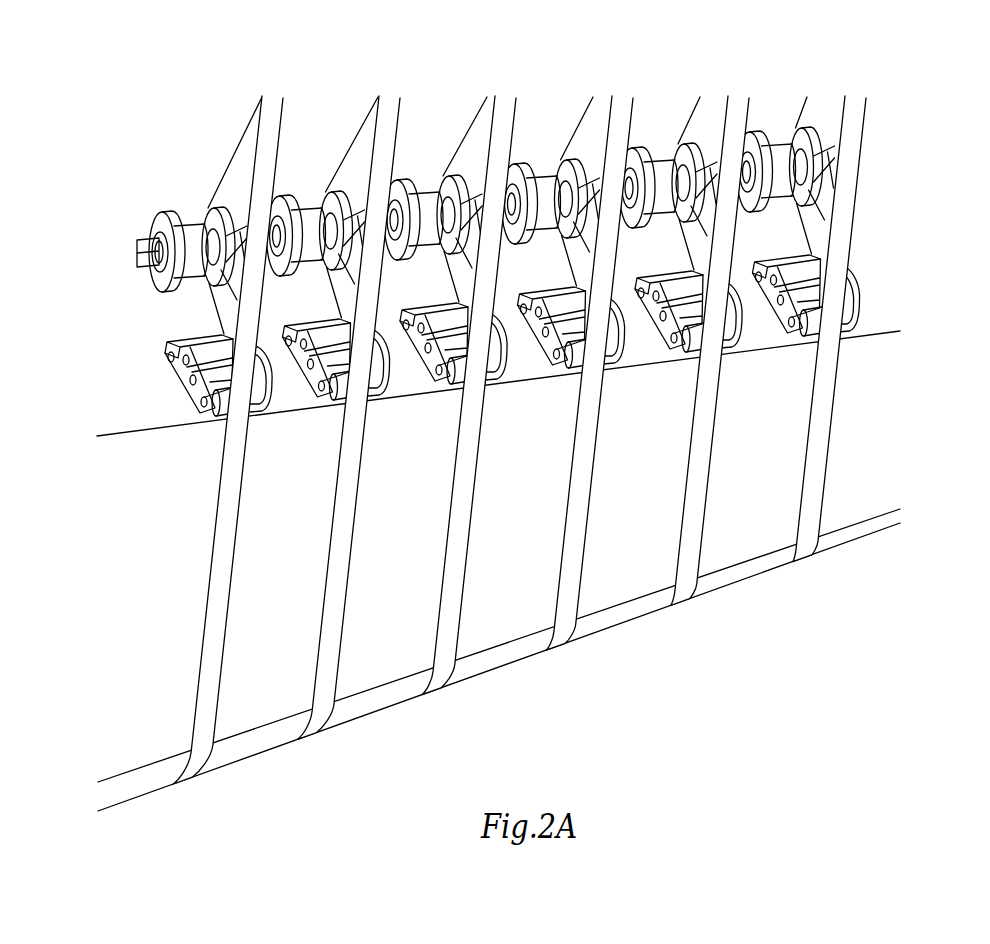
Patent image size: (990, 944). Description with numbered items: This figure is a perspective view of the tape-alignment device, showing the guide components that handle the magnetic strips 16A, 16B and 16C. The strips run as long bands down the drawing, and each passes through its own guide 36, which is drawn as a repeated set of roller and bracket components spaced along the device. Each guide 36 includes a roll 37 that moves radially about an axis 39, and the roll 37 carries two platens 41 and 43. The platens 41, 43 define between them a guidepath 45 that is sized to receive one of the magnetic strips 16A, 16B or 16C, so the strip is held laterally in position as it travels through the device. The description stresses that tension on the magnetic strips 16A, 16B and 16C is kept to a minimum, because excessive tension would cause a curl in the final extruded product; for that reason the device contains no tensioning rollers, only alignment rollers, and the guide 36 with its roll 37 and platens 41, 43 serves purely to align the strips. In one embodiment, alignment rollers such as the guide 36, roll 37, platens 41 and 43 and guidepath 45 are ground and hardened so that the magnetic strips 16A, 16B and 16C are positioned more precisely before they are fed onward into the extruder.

The guide 36 is at (148, 323).
The guidepath 45 is at (222, 336).
The axis 39 is at (176, 378).
The roll 37 is at (190, 401).
The platen 41 is at (218, 430).
The platen 43 is at (277, 417).
The magnetic strip 16A is at (226, 516).
The magnetic strip 16B is at (346, 500).
The magnetic strip 16C is at (463, 480).